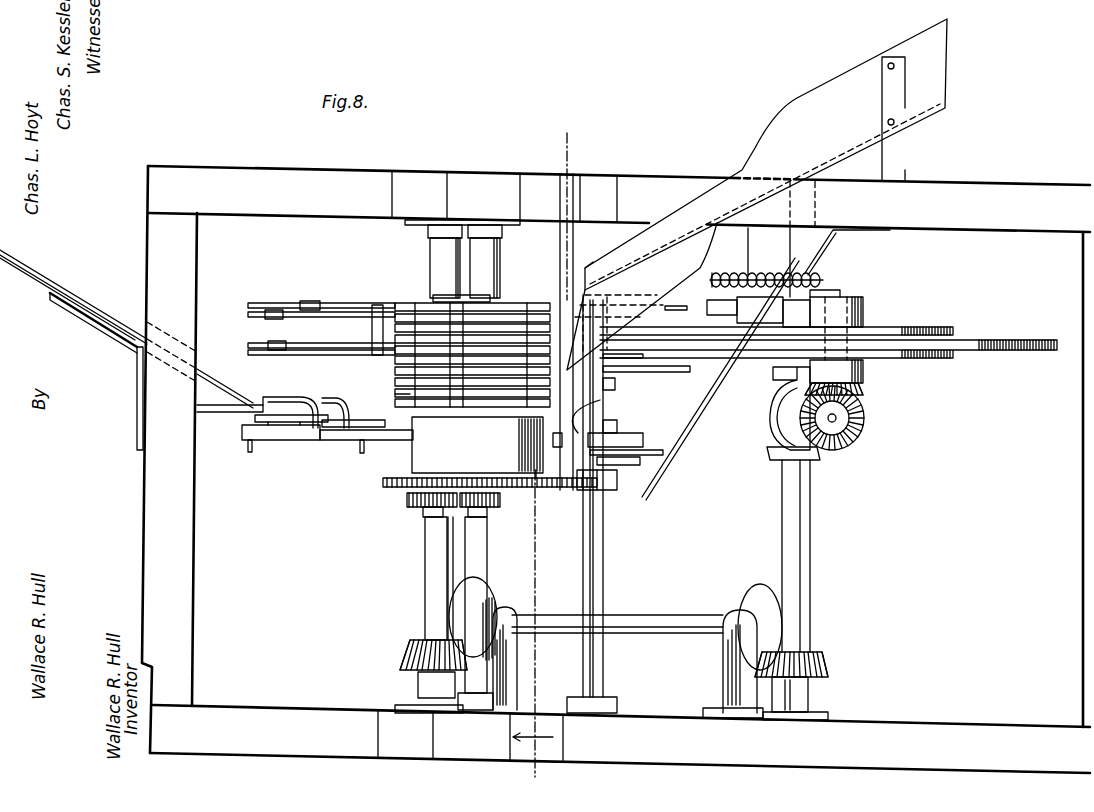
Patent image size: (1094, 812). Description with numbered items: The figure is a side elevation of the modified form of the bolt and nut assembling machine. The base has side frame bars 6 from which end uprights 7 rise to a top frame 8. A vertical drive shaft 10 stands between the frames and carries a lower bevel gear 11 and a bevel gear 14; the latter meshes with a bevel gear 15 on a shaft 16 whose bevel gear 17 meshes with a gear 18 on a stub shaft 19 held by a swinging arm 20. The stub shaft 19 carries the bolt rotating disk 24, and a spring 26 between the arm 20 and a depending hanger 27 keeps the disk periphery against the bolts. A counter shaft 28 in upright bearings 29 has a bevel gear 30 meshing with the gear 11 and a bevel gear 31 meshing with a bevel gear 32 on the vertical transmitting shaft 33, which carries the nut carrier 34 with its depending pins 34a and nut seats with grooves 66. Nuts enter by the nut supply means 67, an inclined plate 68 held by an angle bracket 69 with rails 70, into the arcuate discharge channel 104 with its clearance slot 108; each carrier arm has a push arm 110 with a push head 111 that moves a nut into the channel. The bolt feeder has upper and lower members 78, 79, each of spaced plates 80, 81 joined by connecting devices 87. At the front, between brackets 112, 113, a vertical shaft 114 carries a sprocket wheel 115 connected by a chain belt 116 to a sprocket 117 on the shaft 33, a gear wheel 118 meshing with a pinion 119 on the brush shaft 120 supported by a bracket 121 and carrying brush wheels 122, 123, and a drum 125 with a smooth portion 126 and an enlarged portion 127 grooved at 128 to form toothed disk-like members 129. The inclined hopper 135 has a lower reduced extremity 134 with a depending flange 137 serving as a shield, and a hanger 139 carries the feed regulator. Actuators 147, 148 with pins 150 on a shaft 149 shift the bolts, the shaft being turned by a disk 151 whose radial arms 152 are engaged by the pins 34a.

The side frame bars 6 is at (910, 730).
The end uprights 7 is at (188, 582).
The top frame 8 is at (977, 190).
The vertical drive shaft 10 is at (822, 530).
The lower bevel gear 11 is at (810, 657).
The bevel gear 14 is at (775, 447).
The bevel gear 15 is at (772, 415).
The shaft 16 is at (837, 418).
The bevel gear 17 is at (863, 433).
The gear 18 is at (863, 393).
The stub shaft 19 is at (863, 377).
The swinging arm 20 is at (863, 303).
The disk 24 is at (1013, 355).
The spring 26 is at (805, 273).
The hanger 27 is at (740, 260).
The counter shaft 28 is at (617, 614).
The upright bearings 29 is at (507, 660).
The bevel gear 30 is at (748, 593).
The bevel gear 31 is at (488, 600).
The bevel gear 32 is at (407, 653).
The vertical transmitting shaft 33 is at (432, 590).
The nut carrier 34 is at (337, 440).
The pins 34a is at (250, 445).
The groove 66 is at (273, 430).
The nut supply means 67 is at (131, 331).
The inclined plate 68 is at (76, 323).
The angle bracket 69 is at (140, 382).
The rails 70 is at (32, 295).
The upper member 78 is at (310, 306).
The lower member 79 is at (279, 352).
The plate 80 is at (274, 303).
The plate 81 is at (258, 312).
The connecting devices 87 is at (375, 330).
The discharge channel 104 is at (292, 397).
The clearance slot 108 is at (303, 440).
The push arm 110 is at (312, 400).
The push head 111 is at (262, 412).
The upper bracket 112 is at (483, 196).
The lower bracket 113 is at (471, 736).
The vertical shaft 114 is at (480, 538).
The sprocket wheel 115 is at (570, 487).
The chain belt 116 is at (448, 512).
The sprocket 117 is at (442, 507).
The gear wheel 118 is at (563, 490).
The pinion 119 is at (605, 510).
The brush shaft 120 is at (617, 425).
The bracket 121 is at (620, 482).
The upper brush wheel 122 is at (604, 271).
The lower brush wheel 123 is at (615, 385).
The drum 125 is at (410, 463).
The reduced smooth portion 126 is at (477, 445).
The upper enlarged portion 127 is at (397, 397).
The grooves 128 is at (397, 382).
The disk-like members 129 is at (577, 409).
The lower reduced extremity 134 is at (766, 154).
The hopper 135 is at (938, 93).
The depending flange 137 is at (642, 296).
The hanger 139 is at (558, 258).
The actuator 147 is at (662, 312).
The actuator 148 is at (646, 360).
The shaft 149 is at (605, 565).
The pins 150 is at (700, 385).
The disk 151 is at (640, 460).
The radial arms 152 is at (663, 447).